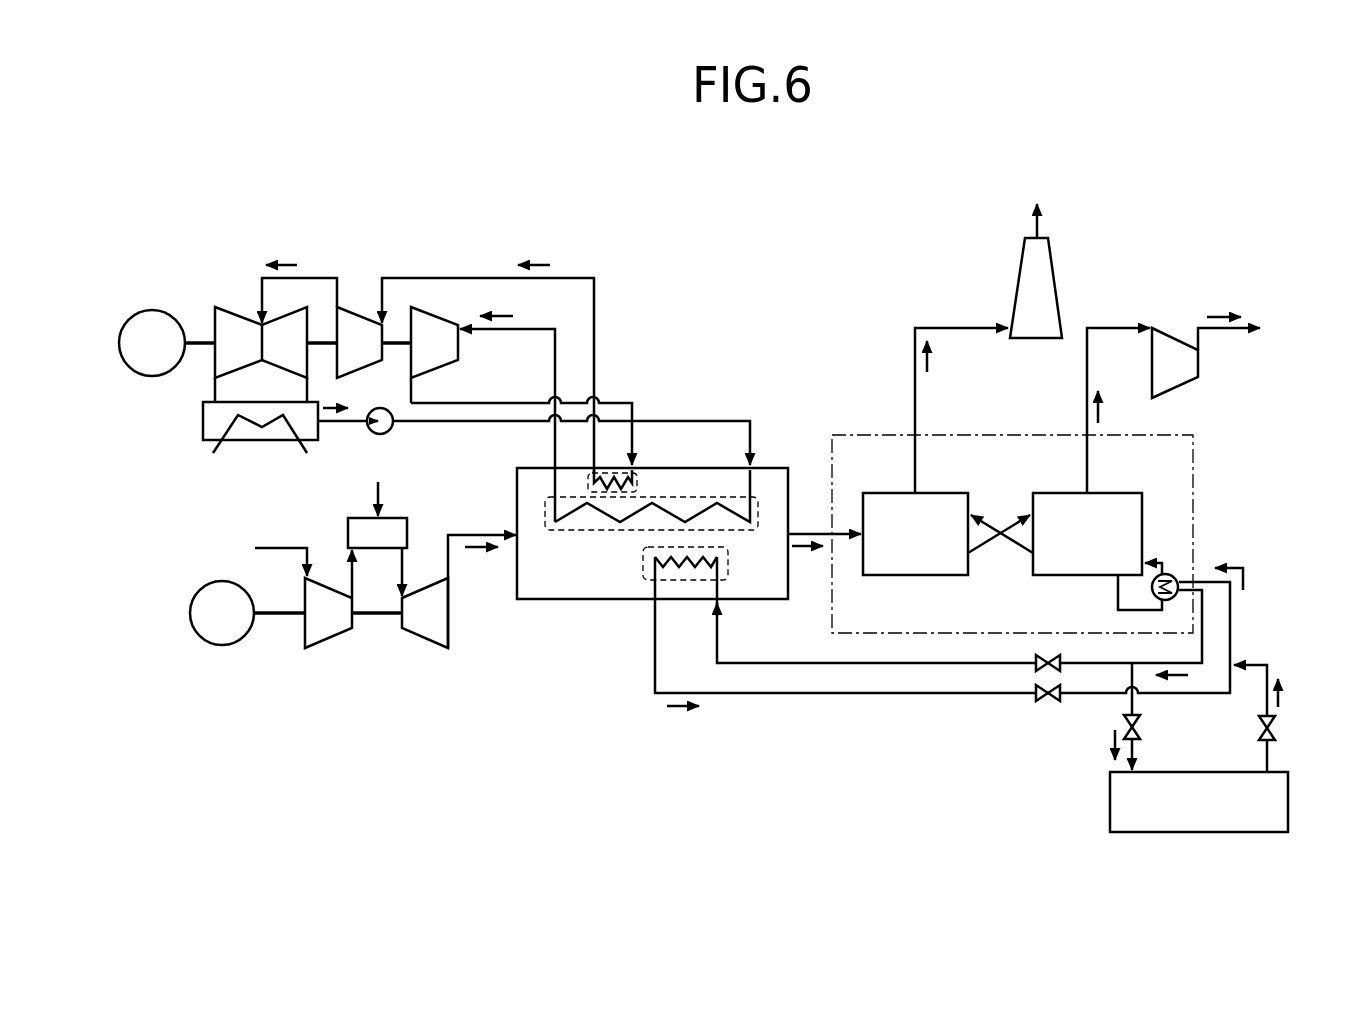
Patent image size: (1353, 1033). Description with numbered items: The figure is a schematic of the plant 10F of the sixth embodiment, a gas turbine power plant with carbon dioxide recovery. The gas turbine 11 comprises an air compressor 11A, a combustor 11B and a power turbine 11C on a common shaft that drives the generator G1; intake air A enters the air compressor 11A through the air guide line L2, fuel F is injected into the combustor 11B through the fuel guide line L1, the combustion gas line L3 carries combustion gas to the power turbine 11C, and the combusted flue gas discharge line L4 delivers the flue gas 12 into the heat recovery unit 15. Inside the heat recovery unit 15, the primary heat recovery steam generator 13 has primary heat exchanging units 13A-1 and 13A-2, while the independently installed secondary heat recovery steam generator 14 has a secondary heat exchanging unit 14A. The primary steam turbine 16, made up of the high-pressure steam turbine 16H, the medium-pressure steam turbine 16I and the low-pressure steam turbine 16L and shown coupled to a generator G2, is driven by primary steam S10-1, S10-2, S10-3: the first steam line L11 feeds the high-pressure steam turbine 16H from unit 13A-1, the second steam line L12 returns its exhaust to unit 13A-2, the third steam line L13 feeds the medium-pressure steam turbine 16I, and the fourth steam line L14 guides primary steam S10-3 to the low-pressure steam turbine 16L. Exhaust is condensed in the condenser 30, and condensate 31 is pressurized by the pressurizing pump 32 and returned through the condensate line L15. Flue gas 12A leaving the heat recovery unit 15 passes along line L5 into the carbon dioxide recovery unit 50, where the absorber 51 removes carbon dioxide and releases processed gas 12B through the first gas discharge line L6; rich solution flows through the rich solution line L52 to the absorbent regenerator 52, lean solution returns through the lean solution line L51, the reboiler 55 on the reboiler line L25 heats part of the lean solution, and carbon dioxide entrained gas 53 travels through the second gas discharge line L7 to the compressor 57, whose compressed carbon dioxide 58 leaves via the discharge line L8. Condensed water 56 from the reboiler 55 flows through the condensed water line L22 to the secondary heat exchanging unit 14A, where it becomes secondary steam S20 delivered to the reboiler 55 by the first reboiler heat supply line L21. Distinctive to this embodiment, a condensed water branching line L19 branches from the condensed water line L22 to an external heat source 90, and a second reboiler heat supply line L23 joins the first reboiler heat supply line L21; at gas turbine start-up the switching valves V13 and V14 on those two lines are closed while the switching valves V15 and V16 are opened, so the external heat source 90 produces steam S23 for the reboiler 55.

The plant 10F is at (797, 240).
The gas turbine 11 is at (468, 722).
The air compressor 11A is at (332, 642).
The combustor 11B is at (380, 550).
The power turbine 11C is at (427, 643).
The flue gas 12 is at (478, 555).
The flue gas 12A is at (800, 553).
The processed gas 12B is at (1038, 223).
The primary heat recovery steam generator 13 is at (653, 410).
The primary heat exchanging unit 13A-1 is at (705, 495).
The primary heat exchanging unit 13A-2 is at (617, 471).
The secondary heat recovery steam generator 14 is at (642, 624).
The secondary heat exchanging unit 14A is at (680, 581).
The heat recovery unit 15 is at (542, 600).
The primary steam turbine 16 is at (495, 202).
The low-pressure steam turbine 16L is at (290, 312).
The medium-pressure steam turbine 16I is at (357, 315).
The high-pressure steam turbine 16H is at (437, 317).
The condenser 30 is at (202, 422).
The condensate 31 is at (337, 403).
The pressurizing pump 32 is at (393, 428).
The CO2 recovery unit 50 is at (1197, 453).
The CO2 absorber 51 is at (930, 492).
The absorbent regenerator 52 is at (1103, 492).
The CO2 entrained gas 53 is at (1103, 410).
The reboiler 55 is at (1170, 578).
The condensed water 56 is at (1180, 680).
The CO2 compressor 57 is at (1173, 330).
The compressed CO2 58 is at (1227, 310).
The external heat source 90 is at (1109, 802).
The generator G1 is at (247, 613).
The generator G2 is at (167, 343).
The fuel F is at (376, 486).
The intake air A is at (243, 550).
The fuel guide line L1 is at (380, 492).
The air guide line L2 is at (280, 548).
The combustion gas line L3 is at (407, 568).
The combusted flue gas discharge line L4 is at (477, 535).
The exhaust gas line to absorber L5 is at (805, 532).
The first gas discharge line L6 is at (955, 327).
The second gas discharge line L7 is at (1113, 327).
The discharge line L8 is at (1230, 337).
The first steam line L11 is at (556, 340).
The second steam line L12 is at (487, 402).
The third steam line L13 is at (596, 291).
The fourth steam line L14 is at (300, 277).
The condensate line L15 is at (490, 422).
The condensed water branching line L19 is at (1127, 707).
The first reboiler heat supply line L21 is at (783, 697).
The condensed water line L22 is at (897, 667).
The second reboiler heat supply line L23 is at (1270, 665).
The reboiler line L25 is at (1115, 590).
The lean solution line L51 is at (1018, 542).
The rich solution line L52 is at (1003, 527).
The primary steam S10-1 is at (498, 313).
The primary steam S10-2 is at (537, 258).
The primary steam S10-3 is at (285, 262).
The secondary steam S20 is at (675, 713).
The steam S23 is at (1280, 697).
The switching valve V13 is at (1050, 700).
The switching valve V14 is at (1037, 668).
The switching valve V15 is at (1141, 745).
The switching valve V16 is at (1276, 732).